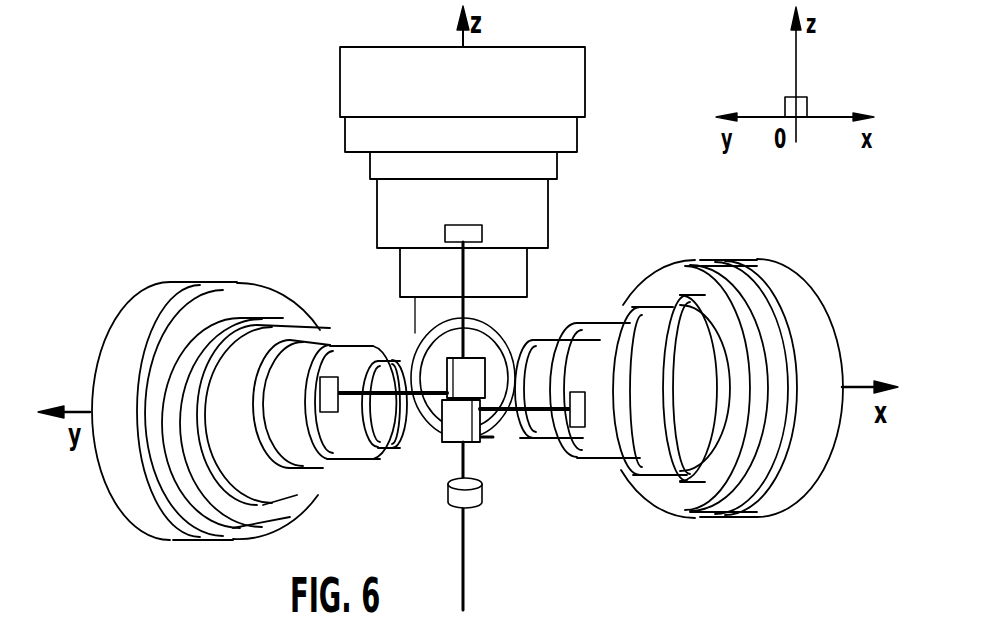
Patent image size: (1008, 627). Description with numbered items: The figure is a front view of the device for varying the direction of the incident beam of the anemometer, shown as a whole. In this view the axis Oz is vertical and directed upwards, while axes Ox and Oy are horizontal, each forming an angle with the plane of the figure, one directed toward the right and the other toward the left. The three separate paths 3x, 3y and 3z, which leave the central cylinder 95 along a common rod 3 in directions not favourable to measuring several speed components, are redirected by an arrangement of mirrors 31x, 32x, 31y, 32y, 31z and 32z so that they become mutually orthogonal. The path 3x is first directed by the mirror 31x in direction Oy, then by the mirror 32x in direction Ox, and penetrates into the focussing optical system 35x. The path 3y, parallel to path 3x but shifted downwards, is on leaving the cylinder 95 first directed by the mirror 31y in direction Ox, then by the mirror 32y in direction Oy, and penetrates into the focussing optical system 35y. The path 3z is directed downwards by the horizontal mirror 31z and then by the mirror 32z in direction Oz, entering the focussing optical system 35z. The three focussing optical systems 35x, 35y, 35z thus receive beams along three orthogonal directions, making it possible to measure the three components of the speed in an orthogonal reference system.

The support rod 3 is at (463, 578).
The path 3x is at (386, 362).
The path 3y is at (513, 297).
The path 3z is at (464, 272).
The mirror 31x is at (470, 372).
The mirror 31y is at (450, 440).
The horizontal mirror 31z is at (465, 236).
The mirror 32x is at (328, 377).
The mirror 32y is at (583, 427).
The mirror 32z is at (490, 496).
The focussing optical system 35x is at (768, 496).
The focussing optical system 35y is at (152, 517).
The focussing optical system 35z is at (570, 90).
The cylinder 95 is at (437, 357).